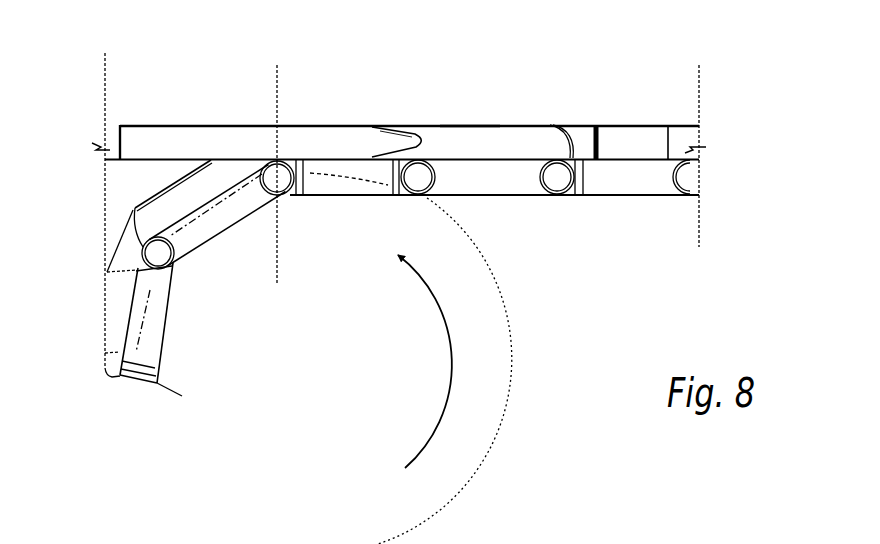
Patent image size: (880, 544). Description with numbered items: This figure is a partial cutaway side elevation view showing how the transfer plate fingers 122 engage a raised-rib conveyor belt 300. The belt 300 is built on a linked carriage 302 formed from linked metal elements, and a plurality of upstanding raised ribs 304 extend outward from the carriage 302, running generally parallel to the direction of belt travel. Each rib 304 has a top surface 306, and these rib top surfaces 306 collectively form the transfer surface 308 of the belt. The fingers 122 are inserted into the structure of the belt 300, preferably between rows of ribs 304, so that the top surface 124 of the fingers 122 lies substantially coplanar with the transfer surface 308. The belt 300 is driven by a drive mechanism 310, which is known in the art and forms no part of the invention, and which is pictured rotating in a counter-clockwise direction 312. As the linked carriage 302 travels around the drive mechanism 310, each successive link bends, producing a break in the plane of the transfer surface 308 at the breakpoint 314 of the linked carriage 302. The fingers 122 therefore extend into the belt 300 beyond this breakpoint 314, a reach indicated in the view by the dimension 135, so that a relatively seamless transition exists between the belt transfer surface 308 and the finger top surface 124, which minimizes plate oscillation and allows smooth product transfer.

The fingers 122 is at (234, 123).
The top surface 124 is at (137, 123).
The travel distance 135 is at (477, 28).
The first conveyor belt 300 is at (556, 226).
The linked carriage 302 is at (482, 182).
The raised ribs 304 is at (605, 125).
The top surface 306 is at (434, 125).
The transfer surface 308 is at (467, 118).
The drive mechanism 310 is at (505, 385).
The counter-clockwise direction 312 is at (452, 330).
The breakpoint 314 is at (277, 107).